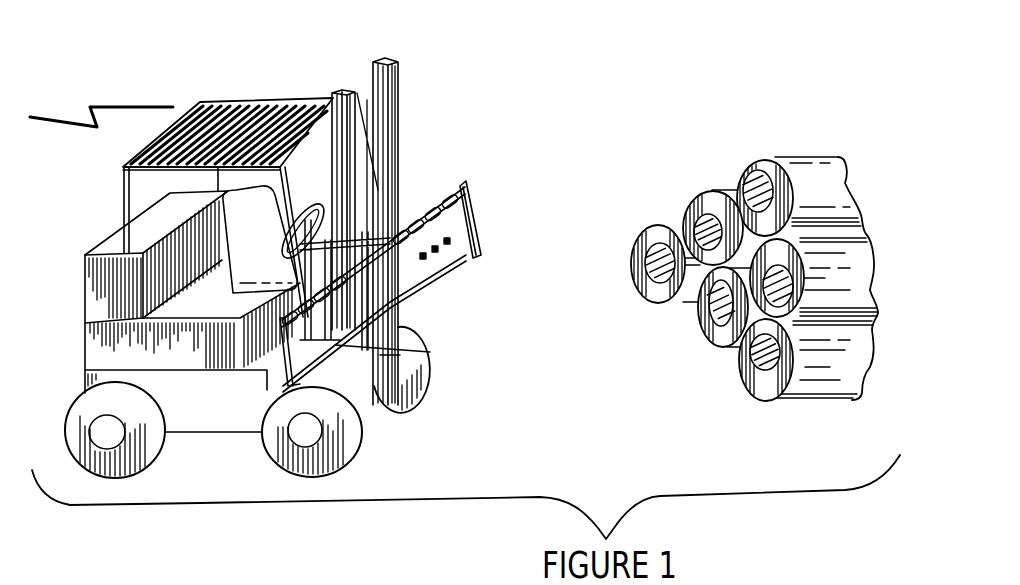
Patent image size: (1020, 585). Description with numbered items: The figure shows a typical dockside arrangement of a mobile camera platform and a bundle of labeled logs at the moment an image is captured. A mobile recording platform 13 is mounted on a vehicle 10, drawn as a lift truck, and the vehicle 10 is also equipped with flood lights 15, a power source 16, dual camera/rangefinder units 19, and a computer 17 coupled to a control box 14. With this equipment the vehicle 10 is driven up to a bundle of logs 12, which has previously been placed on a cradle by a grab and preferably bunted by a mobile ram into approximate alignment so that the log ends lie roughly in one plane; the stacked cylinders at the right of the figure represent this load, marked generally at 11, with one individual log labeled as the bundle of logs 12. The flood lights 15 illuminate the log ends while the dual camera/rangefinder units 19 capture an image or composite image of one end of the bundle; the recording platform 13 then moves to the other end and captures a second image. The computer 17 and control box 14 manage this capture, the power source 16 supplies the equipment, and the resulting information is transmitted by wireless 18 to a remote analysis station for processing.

The vehicle 10 is at (430, 439).
The stack of pipes (load) 11 is at (729, 401).
The bundle of logs 12 is at (694, 213).
The mobile recording platform 13 is at (500, 204).
The control box 14 is at (315, 234).
The flood lights 15 is at (458, 188).
The power source 16 is at (121, 234).
The computer 17 is at (172, 202).
The wireless 18 is at (213, 130).
The dual camera/rangefinder units 19 is at (400, 354).